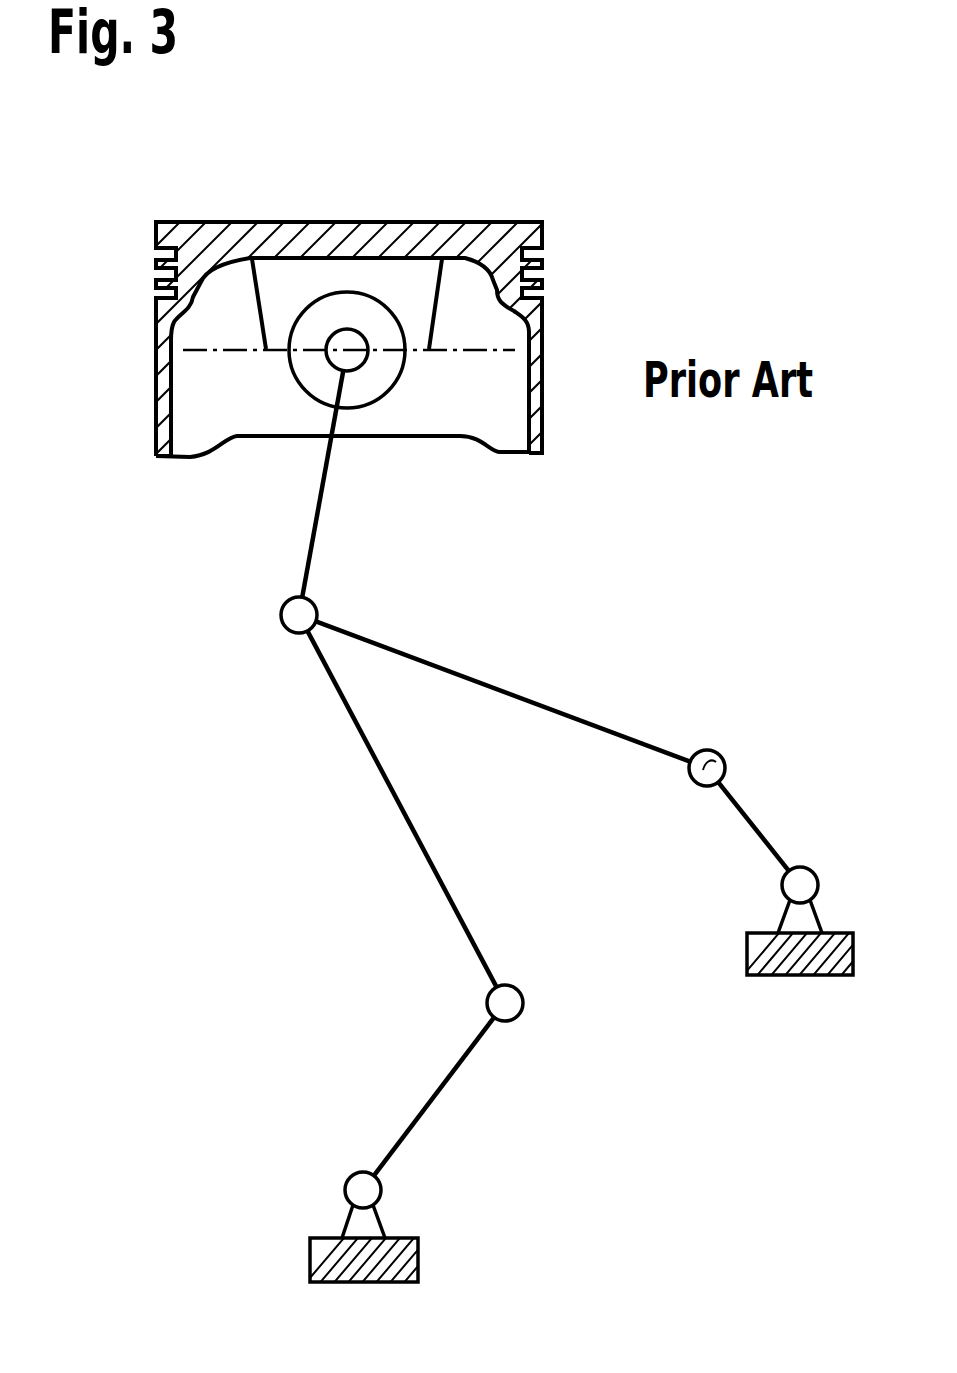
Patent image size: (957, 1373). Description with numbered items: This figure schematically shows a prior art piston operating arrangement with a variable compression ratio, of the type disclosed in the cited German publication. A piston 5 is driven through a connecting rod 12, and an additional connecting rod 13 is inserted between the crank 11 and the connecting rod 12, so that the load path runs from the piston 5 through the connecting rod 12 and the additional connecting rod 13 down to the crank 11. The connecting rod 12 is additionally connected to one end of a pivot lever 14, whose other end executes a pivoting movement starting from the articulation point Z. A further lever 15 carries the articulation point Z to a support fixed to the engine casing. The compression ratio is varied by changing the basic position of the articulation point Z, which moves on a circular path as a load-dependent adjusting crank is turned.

The piston 5 is at (246, 353).
The crank 11 is at (437, 1097).
The connecting rod 12 is at (321, 512).
The additional connecting rod 13 is at (410, 827).
The pivot lever 14 is at (535, 698).
The control lever 15 is at (752, 818).
The articulation point Z is at (719, 755).